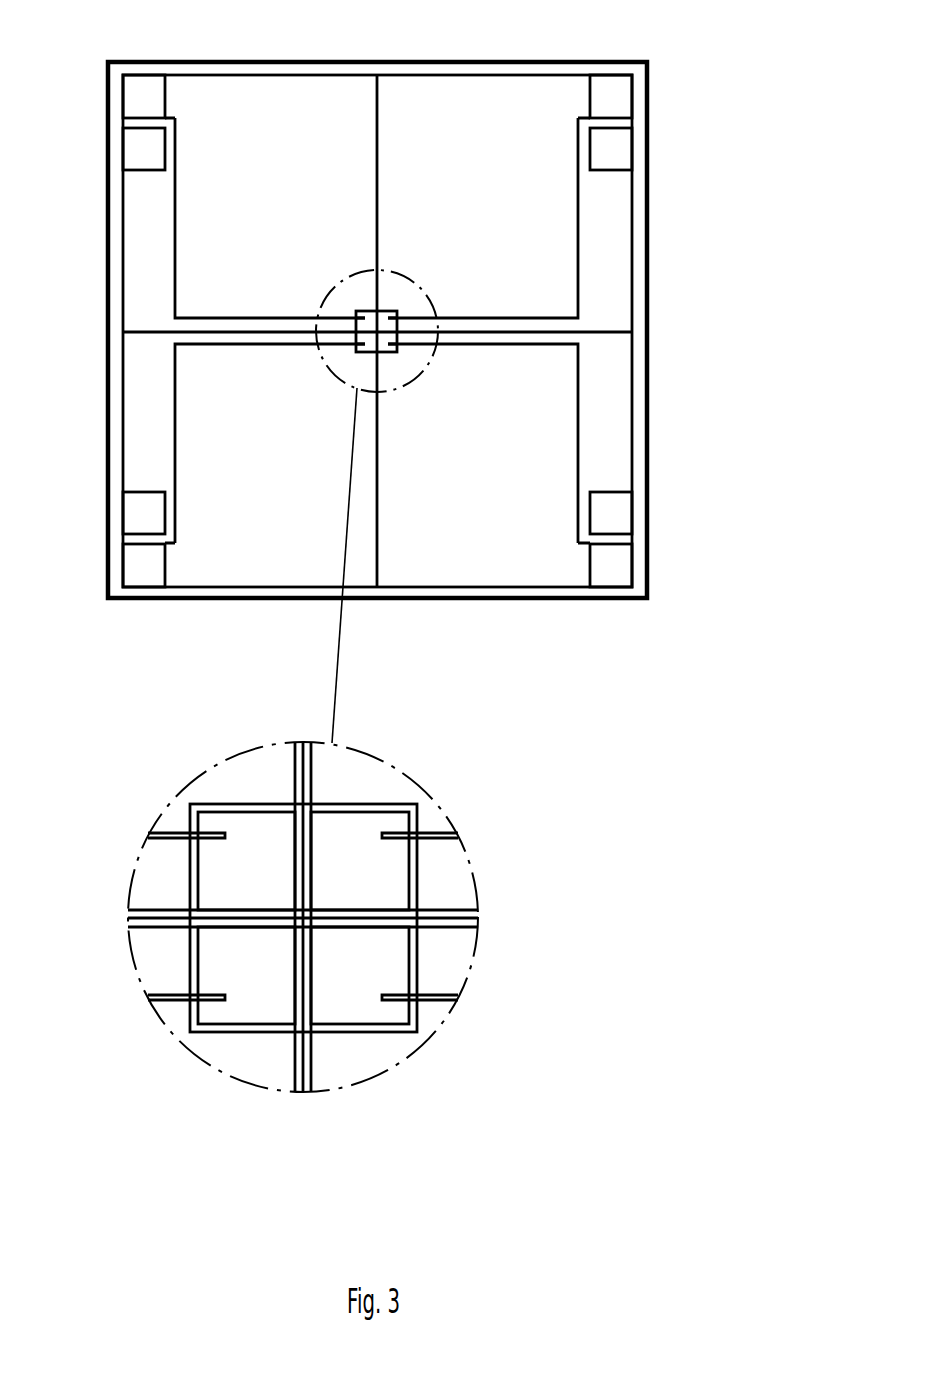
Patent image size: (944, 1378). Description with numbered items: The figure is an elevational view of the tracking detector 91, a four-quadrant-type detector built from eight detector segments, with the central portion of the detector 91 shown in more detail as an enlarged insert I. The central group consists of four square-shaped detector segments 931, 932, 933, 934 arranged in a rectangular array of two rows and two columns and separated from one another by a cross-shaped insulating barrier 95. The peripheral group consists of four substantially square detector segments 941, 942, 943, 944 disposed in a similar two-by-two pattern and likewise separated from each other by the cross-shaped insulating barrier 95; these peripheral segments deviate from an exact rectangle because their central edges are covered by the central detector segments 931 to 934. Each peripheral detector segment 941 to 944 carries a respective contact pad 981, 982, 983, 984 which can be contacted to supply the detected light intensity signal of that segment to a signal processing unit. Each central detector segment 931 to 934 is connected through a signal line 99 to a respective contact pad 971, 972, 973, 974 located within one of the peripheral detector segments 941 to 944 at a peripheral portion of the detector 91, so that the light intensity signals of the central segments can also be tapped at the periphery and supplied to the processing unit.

The tracking detector 91 is at (718, 287).
The detector segment 931 is at (356, 875).
The detector segment 932 is at (356, 978).
The detector segment 933 is at (268, 978).
The detector segment 934 is at (268, 875).
The detector segment 941 is at (492, 205).
The detector segment 942 is at (492, 468).
The detector segment 943 is at (289, 468).
The detector segment 944 is at (289, 205).
The cross-shaped insulating barrier 95 is at (470, 330).
The contact pad 971 is at (590, 92).
The contact pad 972 is at (590, 572).
The contact pad 973 is at (165, 572).
The contact pad 974 is at (165, 92).
The contact pad 981 is at (610, 170).
The contact pad 982 is at (610, 492).
The contact pad 983 is at (145, 492).
The contact pad 984 is at (145, 170).
The signal line 99 is at (245, 318).
The enlarged insert I is at (140, 983).